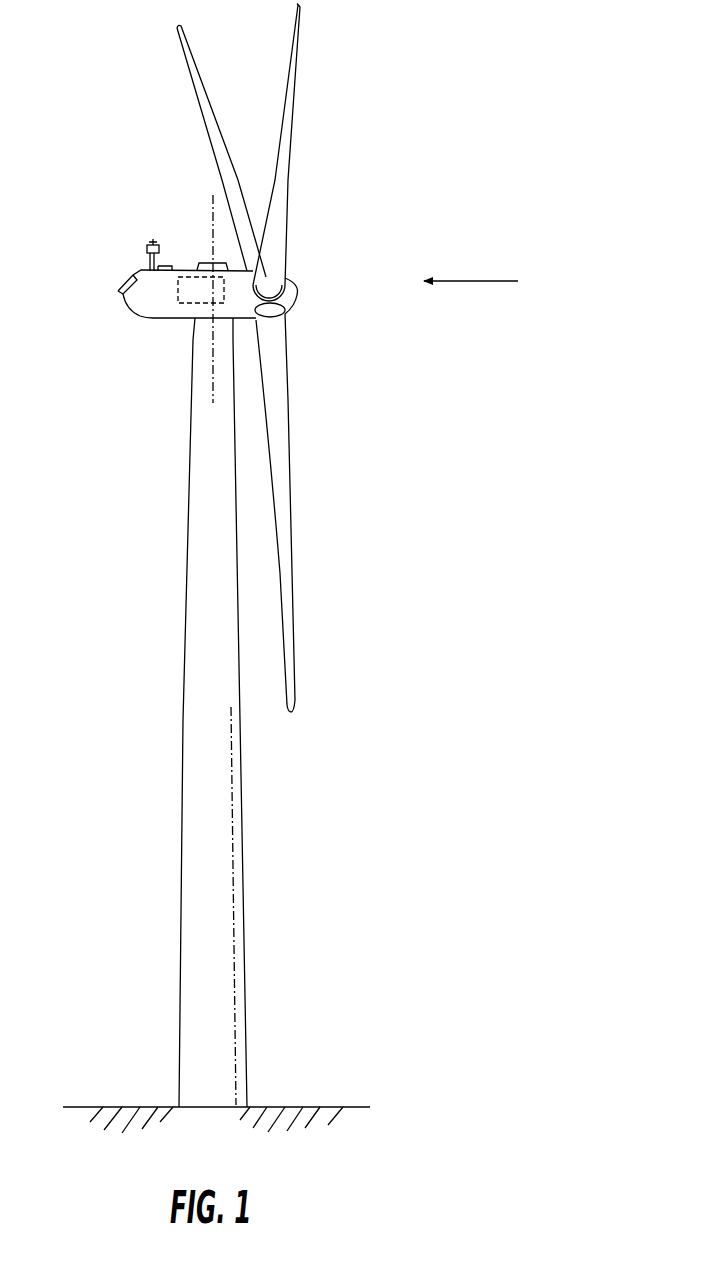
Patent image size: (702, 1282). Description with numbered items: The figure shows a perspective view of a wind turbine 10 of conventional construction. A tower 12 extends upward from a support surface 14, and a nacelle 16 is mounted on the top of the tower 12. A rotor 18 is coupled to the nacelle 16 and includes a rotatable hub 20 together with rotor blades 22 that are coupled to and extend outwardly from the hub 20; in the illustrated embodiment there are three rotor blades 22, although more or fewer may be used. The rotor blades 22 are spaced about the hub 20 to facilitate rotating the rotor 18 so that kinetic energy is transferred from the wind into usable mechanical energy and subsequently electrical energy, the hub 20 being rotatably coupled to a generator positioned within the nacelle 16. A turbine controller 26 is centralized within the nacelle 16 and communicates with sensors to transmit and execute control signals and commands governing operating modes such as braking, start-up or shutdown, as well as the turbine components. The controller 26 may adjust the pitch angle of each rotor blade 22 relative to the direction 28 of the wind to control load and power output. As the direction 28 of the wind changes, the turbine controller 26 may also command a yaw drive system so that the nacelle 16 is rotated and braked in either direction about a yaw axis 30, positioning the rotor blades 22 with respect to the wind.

The wind turbine 10 is at (422, 76).
The tower 12 is at (185, 780).
The support surface 14 is at (137, 1107).
The nacelle 16 is at (157, 320).
The rotor 18 is at (305, 266).
The rotatable hub 20 is at (296, 301).
The rotor blade 22 is at (288, 72).
The turbine controller 26 is at (192, 262).
The direction of the wind 28 is at (490, 281).
The yaw axis 30 is at (213, 198).